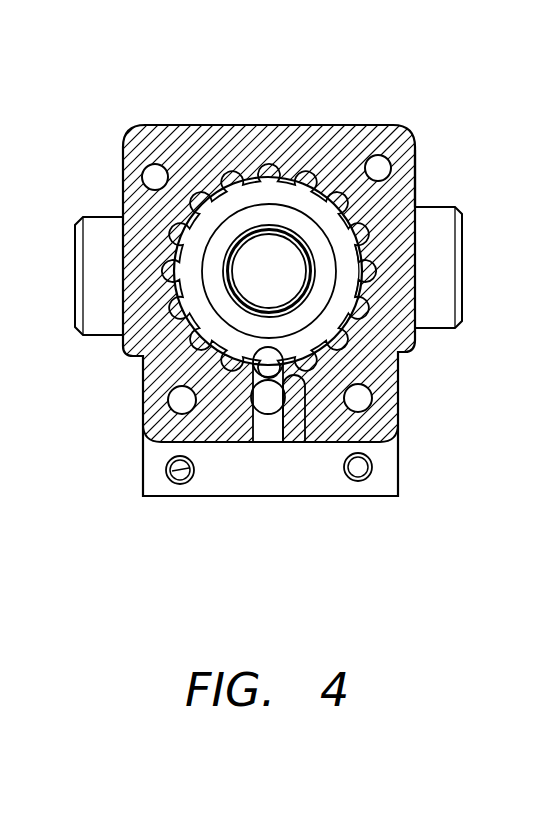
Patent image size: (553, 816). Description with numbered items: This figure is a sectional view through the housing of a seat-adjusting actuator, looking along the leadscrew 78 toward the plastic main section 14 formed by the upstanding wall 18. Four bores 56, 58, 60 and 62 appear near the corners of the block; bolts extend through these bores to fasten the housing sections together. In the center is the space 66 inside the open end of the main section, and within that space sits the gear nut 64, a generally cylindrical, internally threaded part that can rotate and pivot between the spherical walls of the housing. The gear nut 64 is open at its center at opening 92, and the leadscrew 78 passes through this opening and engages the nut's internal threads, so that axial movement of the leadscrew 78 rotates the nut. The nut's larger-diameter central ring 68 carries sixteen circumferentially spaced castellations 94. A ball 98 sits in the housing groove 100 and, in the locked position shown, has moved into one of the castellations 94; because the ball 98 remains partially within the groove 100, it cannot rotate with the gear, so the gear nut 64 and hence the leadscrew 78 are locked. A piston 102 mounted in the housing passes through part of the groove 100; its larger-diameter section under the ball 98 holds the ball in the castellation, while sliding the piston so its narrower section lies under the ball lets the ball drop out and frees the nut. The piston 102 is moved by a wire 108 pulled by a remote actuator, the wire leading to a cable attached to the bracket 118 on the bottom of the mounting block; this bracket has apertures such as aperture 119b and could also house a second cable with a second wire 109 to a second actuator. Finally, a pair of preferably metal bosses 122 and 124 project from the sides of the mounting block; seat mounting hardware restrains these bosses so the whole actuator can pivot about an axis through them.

The plastic main section 14 is at (201, 140).
The upstanding wall 18 is at (405, 178).
The bore 56 is at (176, 160).
The bore 58 is at (411, 133).
The bore 60 is at (373, 401).
The bore 62 is at (150, 425).
The gear nut 64 is at (243, 188).
The space 66 is at (307, 182).
The central ring 68 is at (356, 270).
The leadscrew 78 is at (272, 267).
The opening 92 is at (231, 287).
The castellations 94 is at (268, 196).
The ball 98 is at (258, 361).
The housing groove 100 is at (303, 440).
The piston 102 is at (252, 442).
The wire 108 is at (362, 474).
The second wire 109 is at (168, 473).
The bracket 118 is at (385, 446).
The aperture 119b is at (372, 467).
The boss 122 is at (93, 217).
The boss 124 is at (462, 276).